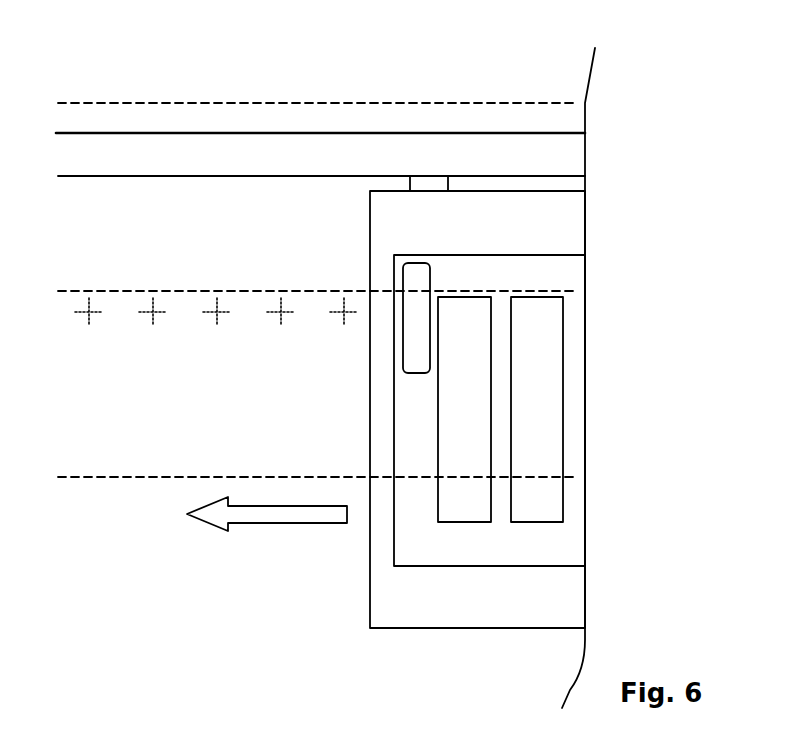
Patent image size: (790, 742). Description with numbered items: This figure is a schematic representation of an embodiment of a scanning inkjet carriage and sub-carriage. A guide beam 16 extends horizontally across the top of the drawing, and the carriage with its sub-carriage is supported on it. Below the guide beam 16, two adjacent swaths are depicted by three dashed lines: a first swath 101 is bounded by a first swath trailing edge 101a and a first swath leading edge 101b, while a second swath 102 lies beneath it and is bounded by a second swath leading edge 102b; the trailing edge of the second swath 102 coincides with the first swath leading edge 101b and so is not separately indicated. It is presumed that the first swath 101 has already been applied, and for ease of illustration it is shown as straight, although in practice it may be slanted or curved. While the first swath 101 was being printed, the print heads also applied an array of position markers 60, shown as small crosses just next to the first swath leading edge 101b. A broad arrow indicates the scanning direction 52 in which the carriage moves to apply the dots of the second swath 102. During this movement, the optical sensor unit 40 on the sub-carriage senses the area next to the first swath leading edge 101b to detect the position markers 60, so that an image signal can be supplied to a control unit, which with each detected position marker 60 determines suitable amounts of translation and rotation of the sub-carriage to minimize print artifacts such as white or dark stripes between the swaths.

The guide beam 16 is at (287, 143).
The first swath trailing edge 101a is at (575, 103).
The first swath leading edge 101b is at (573, 291).
The second swath leading edge 102b is at (573, 477).
The first swath 101 is at (108, 273).
The second swath 102 is at (108, 455).
The position markers 60 is at (178, 332).
The scanning direction 52 is at (245, 517).
The optical sensor unit 40 is at (418, 363).